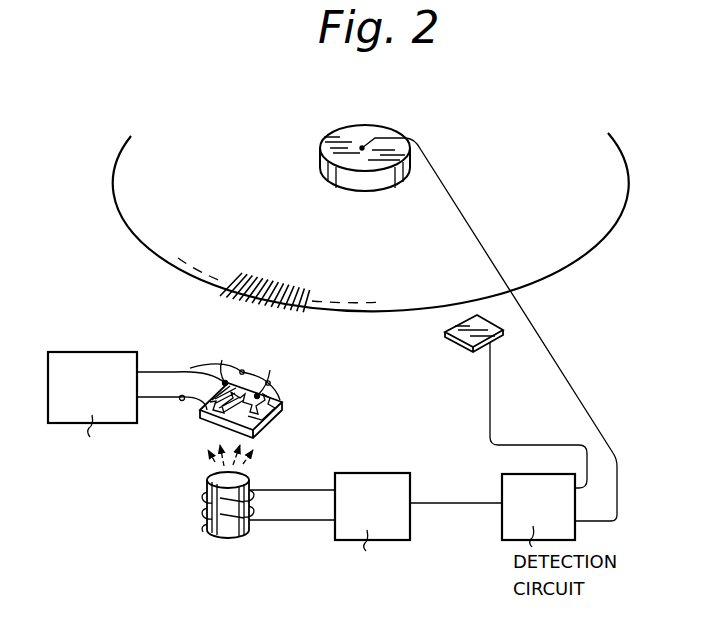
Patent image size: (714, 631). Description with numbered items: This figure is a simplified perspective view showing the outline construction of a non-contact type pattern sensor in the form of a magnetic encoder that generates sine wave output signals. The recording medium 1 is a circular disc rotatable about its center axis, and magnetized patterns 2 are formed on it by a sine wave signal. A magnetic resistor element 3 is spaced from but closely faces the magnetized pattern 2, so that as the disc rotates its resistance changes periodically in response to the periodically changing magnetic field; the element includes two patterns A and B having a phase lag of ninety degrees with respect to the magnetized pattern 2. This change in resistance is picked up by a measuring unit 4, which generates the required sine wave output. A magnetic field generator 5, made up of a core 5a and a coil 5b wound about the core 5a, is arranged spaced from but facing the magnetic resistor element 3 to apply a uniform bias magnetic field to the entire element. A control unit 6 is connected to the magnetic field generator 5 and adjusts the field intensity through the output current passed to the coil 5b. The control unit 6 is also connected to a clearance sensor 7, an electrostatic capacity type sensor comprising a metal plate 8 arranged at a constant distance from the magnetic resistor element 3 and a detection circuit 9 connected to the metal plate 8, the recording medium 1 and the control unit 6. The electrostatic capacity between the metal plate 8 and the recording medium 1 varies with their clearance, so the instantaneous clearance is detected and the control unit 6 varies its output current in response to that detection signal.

The recording medium 1 is at (630, 200).
The magnetized pattern 2 is at (240, 292).
The magnetic resistor element 3 is at (282, 382).
The measuring unit 4 is at (107, 352).
The magnetic field generator 5 is at (223, 510).
The core 5a is at (233, 535).
The coil 5b is at (218, 520).
The control unit 6 is at (380, 473).
The clearance sensor 7 is at (502, 401).
The metal plate 8 is at (473, 350).
The detection circuit 9 is at (507, 475).